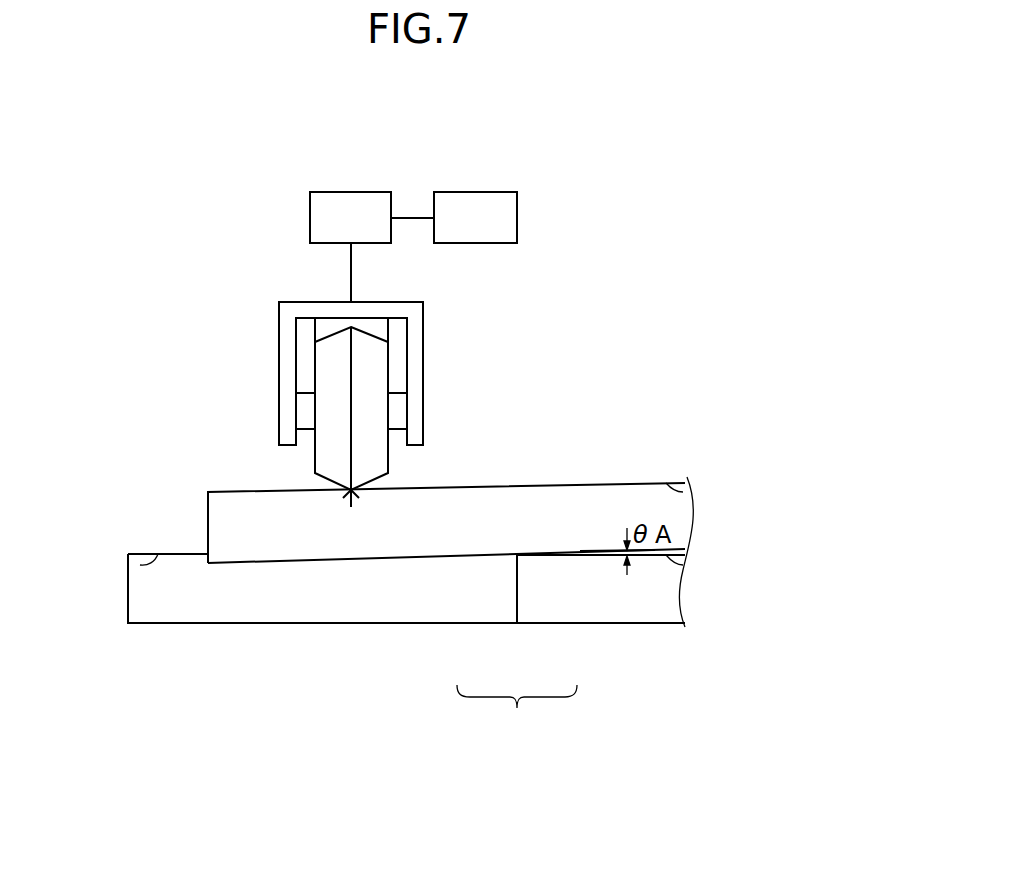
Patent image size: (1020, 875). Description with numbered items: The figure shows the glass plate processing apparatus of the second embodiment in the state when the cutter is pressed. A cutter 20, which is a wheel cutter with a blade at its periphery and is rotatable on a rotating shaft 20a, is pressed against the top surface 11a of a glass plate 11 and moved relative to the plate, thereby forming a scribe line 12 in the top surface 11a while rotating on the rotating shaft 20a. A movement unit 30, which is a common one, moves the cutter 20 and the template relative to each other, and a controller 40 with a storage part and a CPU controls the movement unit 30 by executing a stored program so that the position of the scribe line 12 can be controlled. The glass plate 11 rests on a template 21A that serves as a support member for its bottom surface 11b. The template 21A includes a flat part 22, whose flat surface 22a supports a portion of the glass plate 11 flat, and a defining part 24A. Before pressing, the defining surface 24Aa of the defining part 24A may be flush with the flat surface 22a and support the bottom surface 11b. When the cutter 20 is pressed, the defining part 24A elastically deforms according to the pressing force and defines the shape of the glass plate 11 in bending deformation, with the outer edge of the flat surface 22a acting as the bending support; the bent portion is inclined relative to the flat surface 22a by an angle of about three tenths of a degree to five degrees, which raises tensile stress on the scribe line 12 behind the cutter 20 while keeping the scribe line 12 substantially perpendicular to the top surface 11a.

The movement unit 30 is at (350, 196).
The controller 40 is at (473, 196).
The rotating shaft 20a is at (400, 407).
The cutter 20 is at (380, 457).
The scribe line 12 is at (343, 498).
The glass plate 11 is at (569, 490).
The top surface 11a is at (683, 492).
The bottom surface 11b is at (680, 547).
The flat surface 22a is at (683, 565).
The defining surface 24Aa is at (140, 565).
The defining part 24A is at (483, 623).
The flat part 22 is at (555, 623).
The template 21A is at (542, 739).